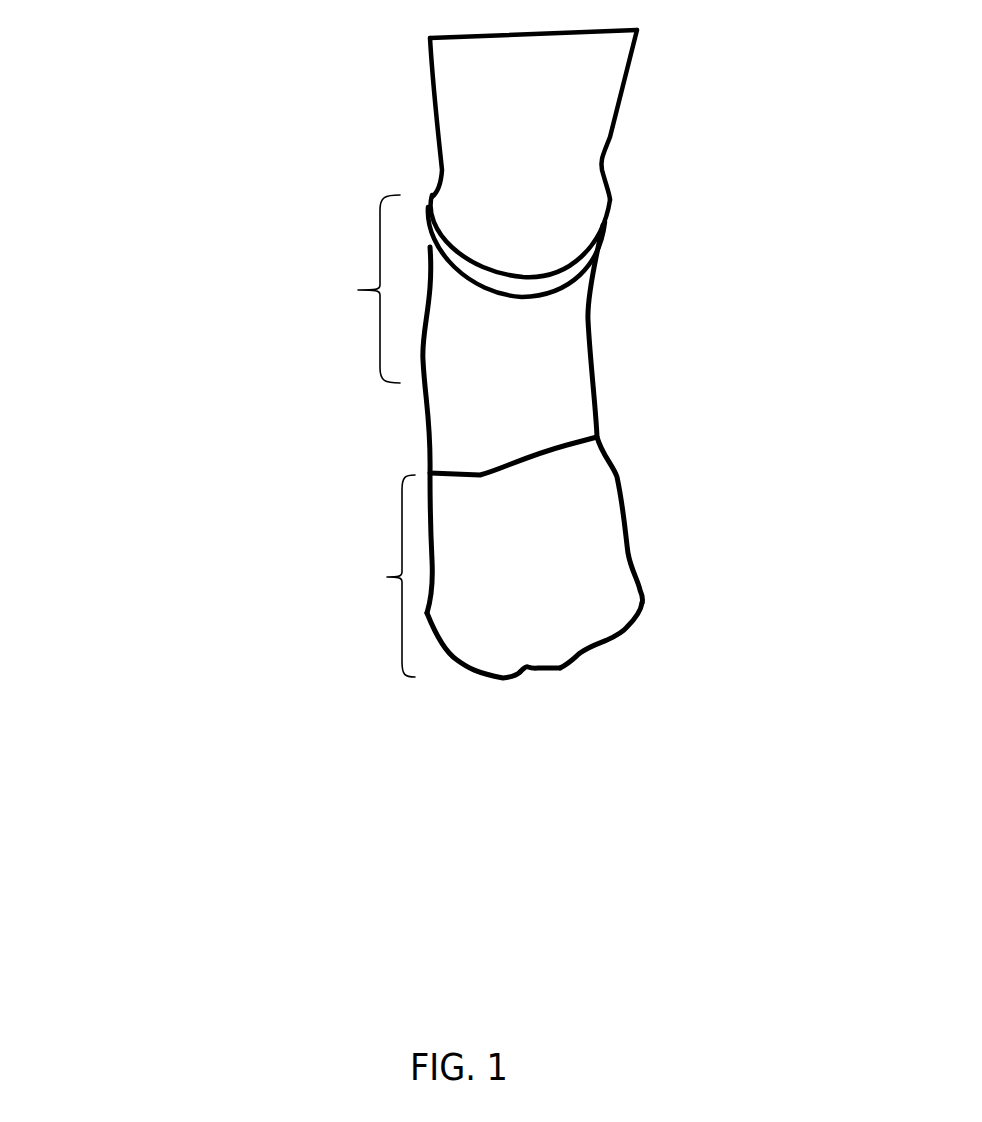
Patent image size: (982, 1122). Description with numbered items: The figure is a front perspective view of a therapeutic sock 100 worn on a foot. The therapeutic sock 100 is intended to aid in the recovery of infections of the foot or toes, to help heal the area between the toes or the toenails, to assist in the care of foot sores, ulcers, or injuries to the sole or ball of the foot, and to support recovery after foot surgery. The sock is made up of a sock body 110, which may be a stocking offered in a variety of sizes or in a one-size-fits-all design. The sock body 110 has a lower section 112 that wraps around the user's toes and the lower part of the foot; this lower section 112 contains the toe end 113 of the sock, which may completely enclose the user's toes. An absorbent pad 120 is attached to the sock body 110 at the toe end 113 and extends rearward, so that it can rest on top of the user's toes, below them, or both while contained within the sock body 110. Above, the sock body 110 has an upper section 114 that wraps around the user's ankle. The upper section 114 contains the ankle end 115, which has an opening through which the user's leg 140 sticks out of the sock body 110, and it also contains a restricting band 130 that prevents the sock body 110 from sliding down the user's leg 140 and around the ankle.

The therapeutic sock 100 is at (77, 129).
The sock body 110 is at (575, 367).
The lower section 112 is at (607, 596).
The toe end 113 is at (597, 675).
The upper section 114 is at (343, 289).
The ankle end 115 is at (517, 265).
The absorbent pad 120 is at (610, 560).
The restricting band 130 is at (517, 285).
The user's leg 140 is at (560, 135).